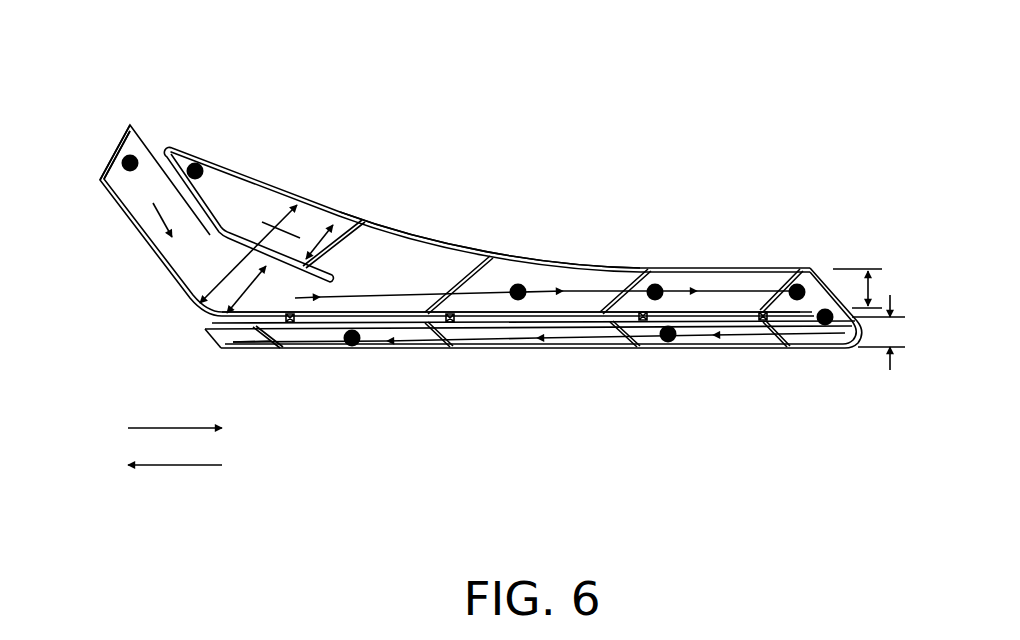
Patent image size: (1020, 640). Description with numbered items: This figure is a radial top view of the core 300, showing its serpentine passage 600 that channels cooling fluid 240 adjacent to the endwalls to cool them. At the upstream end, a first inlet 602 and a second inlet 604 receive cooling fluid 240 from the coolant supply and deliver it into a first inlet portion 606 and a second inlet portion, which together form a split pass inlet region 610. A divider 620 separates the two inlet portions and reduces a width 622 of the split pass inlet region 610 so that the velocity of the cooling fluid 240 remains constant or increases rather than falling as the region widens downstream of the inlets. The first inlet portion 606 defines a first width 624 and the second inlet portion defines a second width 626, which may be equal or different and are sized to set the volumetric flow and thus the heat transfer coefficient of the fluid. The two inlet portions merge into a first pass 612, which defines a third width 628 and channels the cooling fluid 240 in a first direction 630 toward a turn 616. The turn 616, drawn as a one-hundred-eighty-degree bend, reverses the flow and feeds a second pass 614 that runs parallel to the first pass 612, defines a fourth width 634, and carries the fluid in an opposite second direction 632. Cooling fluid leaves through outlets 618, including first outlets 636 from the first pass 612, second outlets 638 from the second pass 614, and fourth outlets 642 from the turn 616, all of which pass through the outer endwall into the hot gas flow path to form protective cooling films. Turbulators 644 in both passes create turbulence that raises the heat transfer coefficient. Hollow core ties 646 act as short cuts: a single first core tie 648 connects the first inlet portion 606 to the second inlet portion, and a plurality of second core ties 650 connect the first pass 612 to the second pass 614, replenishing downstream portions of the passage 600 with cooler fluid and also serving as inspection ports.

The cooling fluid 240 is at (262, 222).
The core 300 is at (104, 97).
The passage 600 is at (425, 168).
The first inlet 602 is at (115, 157).
The second inlet 604 is at (183, 148).
The first inlet portion 606 is at (115, 190).
The split pass inlet region 610 is at (136, 93).
The first pass 612 is at (420, 247).
The second pass 614 is at (342, 352).
The turn 616 is at (835, 285).
The outlet 618 is at (522, 290).
The divider 620 is at (195, 232).
The width 622 is at (215, 258).
The first width 624 is at (205, 323).
The second width 626 is at (317, 228).
The third width 628 is at (880, 285).
The first direction 630 is at (165, 427).
The second direction 632 is at (178, 466).
The fourth width 634 is at (905, 340).
The first outlet 636 is at (590, 300).
The second outlet 638 is at (355, 345).
The fourth outlet 642 is at (832, 330).
The turbulator 644 is at (462, 280).
The hollow core tie 646 is at (451, 323).
The first core tie 648 is at (268, 323).
The second core tie 650 is at (292, 330).